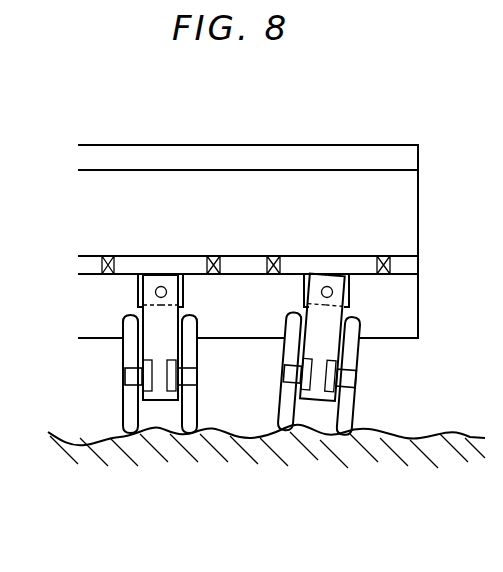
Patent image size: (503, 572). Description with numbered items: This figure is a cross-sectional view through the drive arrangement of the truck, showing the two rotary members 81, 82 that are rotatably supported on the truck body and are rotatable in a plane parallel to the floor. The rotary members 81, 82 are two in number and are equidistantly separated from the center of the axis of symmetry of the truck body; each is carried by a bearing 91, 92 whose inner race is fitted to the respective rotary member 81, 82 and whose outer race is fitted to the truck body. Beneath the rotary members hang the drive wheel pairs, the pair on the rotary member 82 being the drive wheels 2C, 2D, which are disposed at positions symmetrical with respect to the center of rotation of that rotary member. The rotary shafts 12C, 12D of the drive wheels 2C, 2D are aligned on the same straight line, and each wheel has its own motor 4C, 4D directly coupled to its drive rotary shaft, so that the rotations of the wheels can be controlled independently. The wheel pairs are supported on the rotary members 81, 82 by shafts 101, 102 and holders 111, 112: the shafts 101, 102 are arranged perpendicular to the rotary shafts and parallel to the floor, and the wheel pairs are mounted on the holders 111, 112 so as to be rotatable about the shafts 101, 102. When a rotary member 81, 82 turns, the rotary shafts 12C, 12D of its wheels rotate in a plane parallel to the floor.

The rotary member 81 is at (348, 258).
The rotary member 82 is at (133, 258).
The bearing 91 is at (383, 257).
The bearing 92 is at (100, 257).
The shaft 101 is at (333, 292).
The shaft 102 is at (155, 292).
The holder 111 is at (348, 315).
The holder 112 is at (142, 310).
The drive wheel 2C is at (198, 403).
The drive wheel 2D is at (125, 412).
The motor 4C is at (171, 400).
The motor 4D is at (147, 400).
The rotary shaft 12C is at (186, 390).
The rotary shaft 12D is at (128, 388).